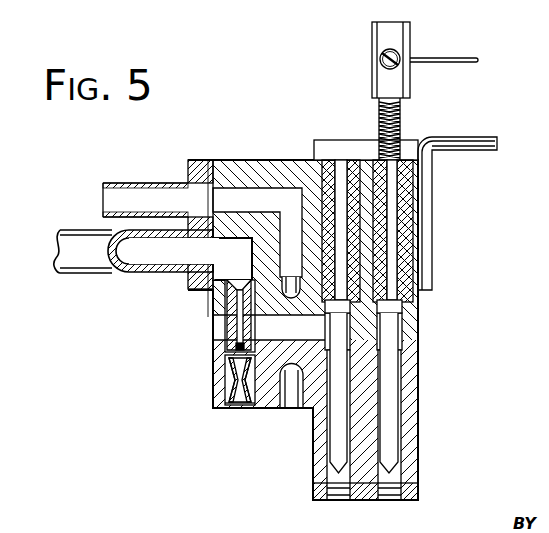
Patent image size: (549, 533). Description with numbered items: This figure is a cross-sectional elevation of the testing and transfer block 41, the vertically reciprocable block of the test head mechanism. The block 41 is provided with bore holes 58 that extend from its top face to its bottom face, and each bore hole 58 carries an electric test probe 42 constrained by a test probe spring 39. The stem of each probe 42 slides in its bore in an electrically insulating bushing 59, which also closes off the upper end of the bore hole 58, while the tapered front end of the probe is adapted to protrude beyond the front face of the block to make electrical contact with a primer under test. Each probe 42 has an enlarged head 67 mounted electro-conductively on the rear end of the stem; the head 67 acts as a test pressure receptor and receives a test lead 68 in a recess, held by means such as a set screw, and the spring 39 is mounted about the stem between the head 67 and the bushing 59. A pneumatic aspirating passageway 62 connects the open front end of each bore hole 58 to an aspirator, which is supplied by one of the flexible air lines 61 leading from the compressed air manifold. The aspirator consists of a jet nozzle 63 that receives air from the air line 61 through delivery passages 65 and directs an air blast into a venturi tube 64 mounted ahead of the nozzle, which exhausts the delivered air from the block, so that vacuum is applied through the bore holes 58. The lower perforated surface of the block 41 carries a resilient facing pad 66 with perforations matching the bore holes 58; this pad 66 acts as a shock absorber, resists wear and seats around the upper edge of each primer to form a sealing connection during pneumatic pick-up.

The test probe spring 39 is at (402, 116).
The testing and transfer block 41 is at (277, 160).
The electric test probe 42 is at (390, 333).
The bore hole 58 is at (398, 403).
The electrically insulating bushing 59 is at (326, 166).
The flexible air line 61 is at (103, 275).
The pneumatic aspirating passageway 62 is at (270, 326).
The jet nozzle 63 is at (286, 281).
The venturi tube 64 is at (240, 388).
The delivery passage 65 is at (236, 192).
The resilient facing pad 66 is at (373, 500).
The enlarged probe head 67 is at (384, 37).
The test lead 68 is at (457, 60).